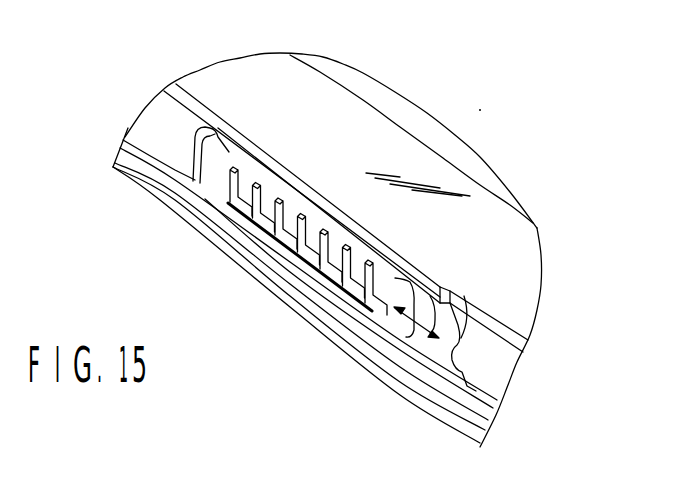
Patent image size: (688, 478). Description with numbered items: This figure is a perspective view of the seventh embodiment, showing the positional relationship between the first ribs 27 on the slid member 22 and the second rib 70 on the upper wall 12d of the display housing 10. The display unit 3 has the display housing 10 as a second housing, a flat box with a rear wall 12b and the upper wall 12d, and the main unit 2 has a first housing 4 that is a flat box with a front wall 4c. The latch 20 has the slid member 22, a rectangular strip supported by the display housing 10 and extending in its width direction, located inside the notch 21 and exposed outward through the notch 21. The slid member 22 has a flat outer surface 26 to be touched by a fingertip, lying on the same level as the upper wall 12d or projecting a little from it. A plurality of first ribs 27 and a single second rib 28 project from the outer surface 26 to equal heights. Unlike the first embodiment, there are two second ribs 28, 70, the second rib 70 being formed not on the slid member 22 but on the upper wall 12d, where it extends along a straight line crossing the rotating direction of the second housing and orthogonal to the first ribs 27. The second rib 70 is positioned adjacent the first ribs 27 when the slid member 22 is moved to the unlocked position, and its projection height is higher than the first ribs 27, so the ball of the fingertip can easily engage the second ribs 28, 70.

The main unit 2 is at (500, 426).
The display unit 3 is at (530, 243).
The first housing 4 is at (292, 300).
The front wall 4c is at (430, 390).
The display housing 10 is at (527, 312).
The rear wall 12b is at (297, 80).
The upper wall 12d is at (158, 130).
The latch 20 is at (204, 203).
The notch 21 is at (452, 350).
The slid member 22 is at (217, 157).
The outer surface 26 is at (395, 278).
The first ribs 27 is at (257, 183).
The second rib 28 is at (277, 243).
The second rib 70 is at (423, 278).